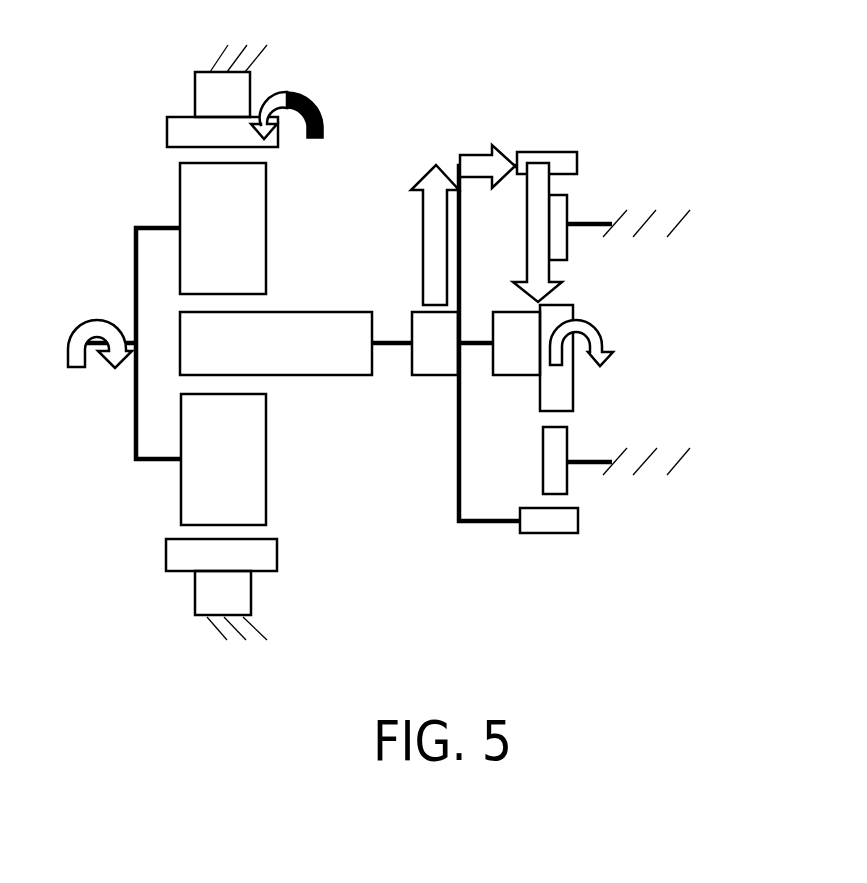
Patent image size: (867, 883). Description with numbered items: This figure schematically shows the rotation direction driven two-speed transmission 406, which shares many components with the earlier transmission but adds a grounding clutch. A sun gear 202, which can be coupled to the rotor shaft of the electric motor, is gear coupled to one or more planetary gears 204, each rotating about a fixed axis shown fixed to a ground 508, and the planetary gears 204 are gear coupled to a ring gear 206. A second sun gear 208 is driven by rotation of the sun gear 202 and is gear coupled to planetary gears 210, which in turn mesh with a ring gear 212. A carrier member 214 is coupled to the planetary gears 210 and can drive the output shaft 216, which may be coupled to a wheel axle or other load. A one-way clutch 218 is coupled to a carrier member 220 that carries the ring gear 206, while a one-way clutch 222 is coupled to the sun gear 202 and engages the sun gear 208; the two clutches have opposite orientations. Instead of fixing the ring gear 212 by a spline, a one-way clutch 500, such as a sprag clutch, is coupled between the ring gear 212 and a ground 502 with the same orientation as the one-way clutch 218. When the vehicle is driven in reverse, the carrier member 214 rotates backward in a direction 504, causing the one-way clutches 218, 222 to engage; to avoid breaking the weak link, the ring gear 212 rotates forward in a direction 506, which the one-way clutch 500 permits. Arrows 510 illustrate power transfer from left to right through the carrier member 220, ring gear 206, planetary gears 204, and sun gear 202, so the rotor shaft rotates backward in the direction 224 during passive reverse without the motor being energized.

The sun gear 202 is at (574, 385).
The planetary gears 204 is at (568, 204).
The ring gear 206 is at (578, 163).
The sun gear 208 is at (294, 354).
The planetary gears 210 is at (241, 241).
The ring gear 212 is at (240, 143).
The carrier member 214 is at (140, 226).
The output shaft 216 is at (104, 353).
The one-way clutch 218 is at (453, 354).
The carrier member 220 is at (458, 439).
The one-way clutch 222 is at (534, 354).
The direction 224 is at (602, 333).
The rotation direction driven two-speed transmission 406 is at (663, 62).
The one-way clutch 500 is at (240, 104).
The ground 502 is at (217, 55).
The direction 504 is at (94, 327).
The direction 506 is at (307, 108).
The ground 508 is at (688, 226).
The arrows 510 is at (423, 211).